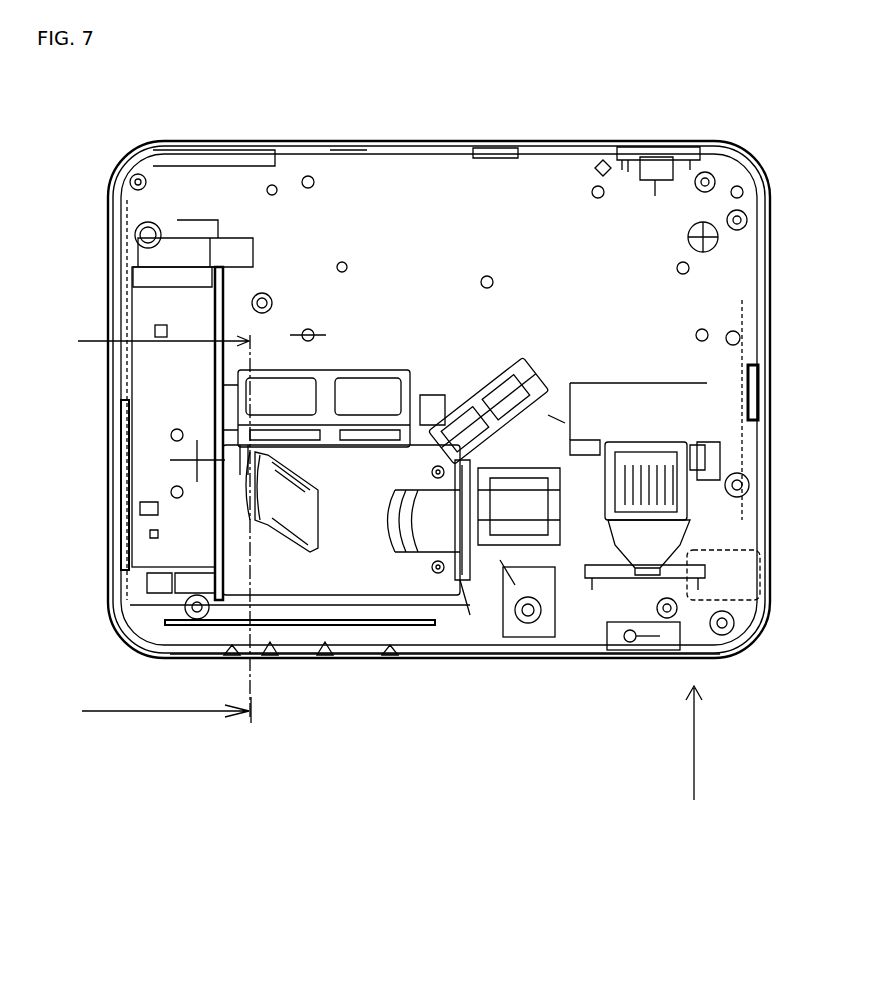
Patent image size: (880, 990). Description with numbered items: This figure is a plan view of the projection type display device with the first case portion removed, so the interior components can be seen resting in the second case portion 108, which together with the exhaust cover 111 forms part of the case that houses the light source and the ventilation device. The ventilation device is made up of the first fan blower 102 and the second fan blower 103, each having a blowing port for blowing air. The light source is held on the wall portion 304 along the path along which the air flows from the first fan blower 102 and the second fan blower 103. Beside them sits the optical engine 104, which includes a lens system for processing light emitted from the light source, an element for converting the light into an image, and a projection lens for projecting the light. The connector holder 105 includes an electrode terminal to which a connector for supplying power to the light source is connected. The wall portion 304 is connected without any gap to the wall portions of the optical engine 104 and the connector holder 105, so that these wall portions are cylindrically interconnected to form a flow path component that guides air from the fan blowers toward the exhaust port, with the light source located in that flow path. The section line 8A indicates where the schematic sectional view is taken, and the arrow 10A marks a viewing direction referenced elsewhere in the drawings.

The first fan blower 102 is at (333, 395).
The second fan blower 103 is at (470, 418).
The optical engine 104 is at (560, 518).
The connector holder 105 is at (140, 465).
The second case portion 108 is at (565, 283).
The wall portion for holding the light source 304 is at (340, 535).
The exhaust cover 111 is at (283, 658).
The section line 8A- 8A is at (147, 528).
The view direction 10A is at (694, 762).